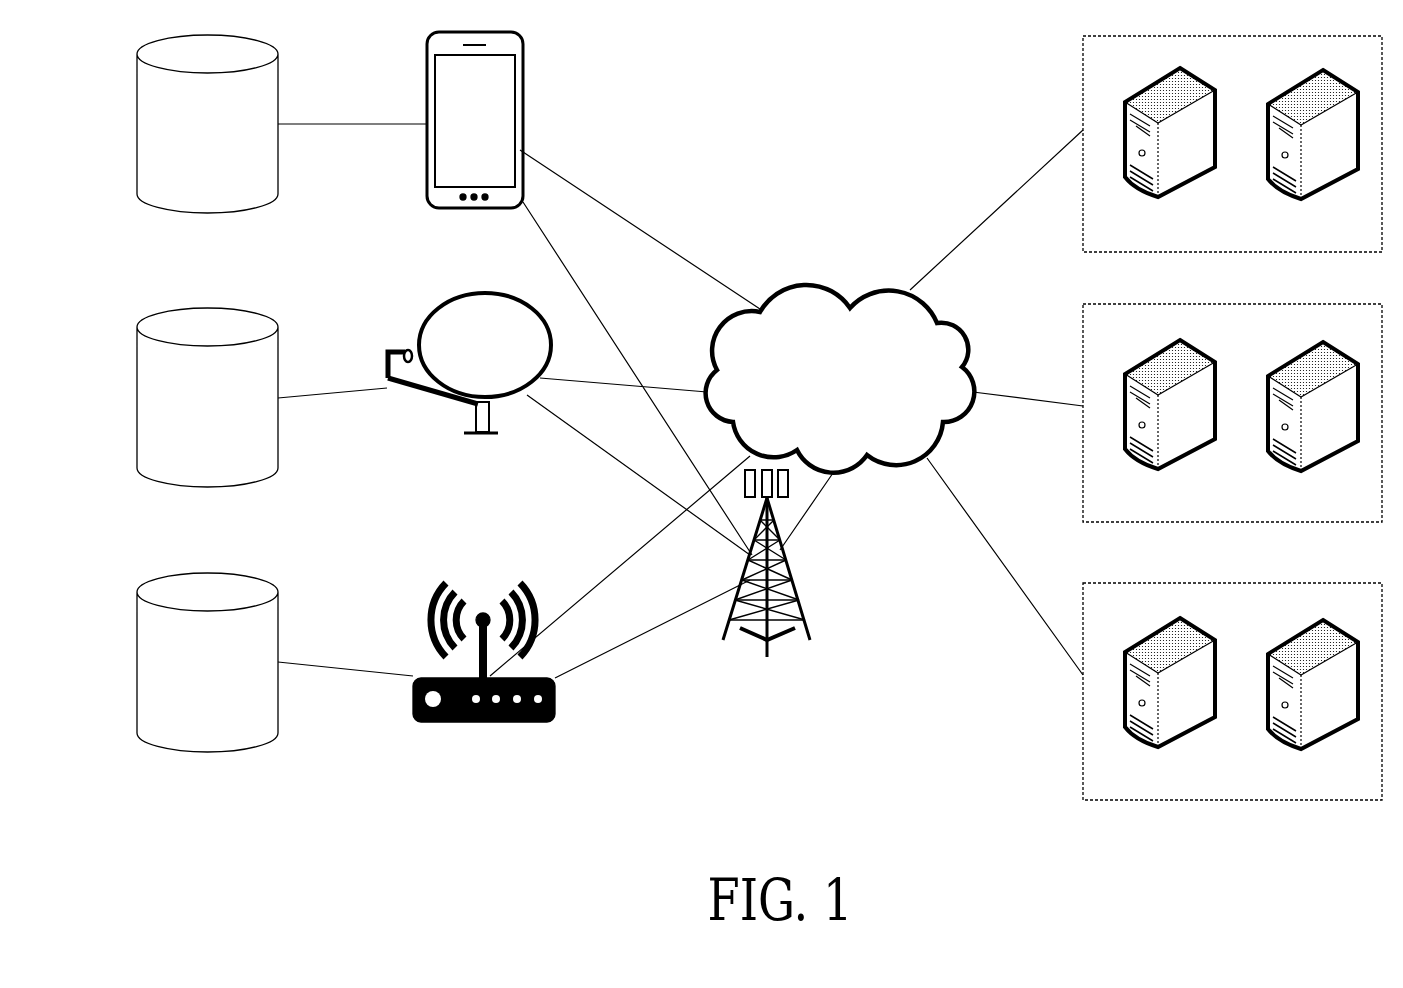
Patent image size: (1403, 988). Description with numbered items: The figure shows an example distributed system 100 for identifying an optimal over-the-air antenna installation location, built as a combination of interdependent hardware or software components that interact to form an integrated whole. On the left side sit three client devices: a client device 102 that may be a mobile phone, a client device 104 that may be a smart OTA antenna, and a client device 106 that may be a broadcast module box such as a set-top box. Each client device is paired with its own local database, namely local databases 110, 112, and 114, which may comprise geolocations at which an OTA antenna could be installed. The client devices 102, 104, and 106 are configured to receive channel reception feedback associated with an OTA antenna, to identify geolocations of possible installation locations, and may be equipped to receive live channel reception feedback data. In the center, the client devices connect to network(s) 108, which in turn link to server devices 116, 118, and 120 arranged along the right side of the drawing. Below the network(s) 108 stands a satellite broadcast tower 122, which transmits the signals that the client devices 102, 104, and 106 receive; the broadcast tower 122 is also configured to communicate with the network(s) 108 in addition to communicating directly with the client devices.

The system 100 is at (858, 85).
The client device 102 is at (458, 142).
The client device 104 is at (457, 494).
The client device 106 is at (470, 769).
The network(s) 108 is at (823, 421).
The local database 110 is at (191, 137).
The local database 112 is at (191, 412).
The local database 114 is at (191, 676).
The server device 116 is at (1216, 237).
The server device 118 is at (1216, 507).
The server device 120 is at (1216, 786).
The satellite broadcast tower 122 is at (750, 702).